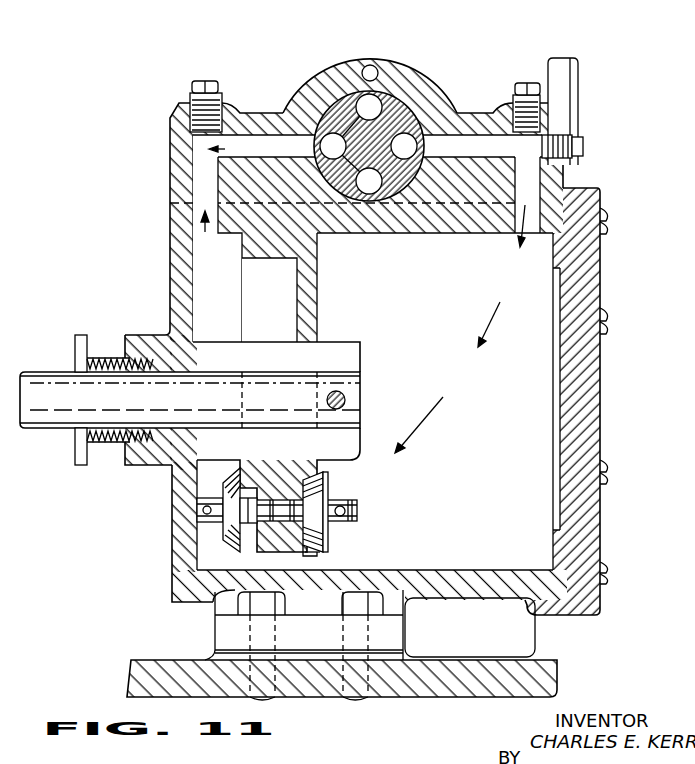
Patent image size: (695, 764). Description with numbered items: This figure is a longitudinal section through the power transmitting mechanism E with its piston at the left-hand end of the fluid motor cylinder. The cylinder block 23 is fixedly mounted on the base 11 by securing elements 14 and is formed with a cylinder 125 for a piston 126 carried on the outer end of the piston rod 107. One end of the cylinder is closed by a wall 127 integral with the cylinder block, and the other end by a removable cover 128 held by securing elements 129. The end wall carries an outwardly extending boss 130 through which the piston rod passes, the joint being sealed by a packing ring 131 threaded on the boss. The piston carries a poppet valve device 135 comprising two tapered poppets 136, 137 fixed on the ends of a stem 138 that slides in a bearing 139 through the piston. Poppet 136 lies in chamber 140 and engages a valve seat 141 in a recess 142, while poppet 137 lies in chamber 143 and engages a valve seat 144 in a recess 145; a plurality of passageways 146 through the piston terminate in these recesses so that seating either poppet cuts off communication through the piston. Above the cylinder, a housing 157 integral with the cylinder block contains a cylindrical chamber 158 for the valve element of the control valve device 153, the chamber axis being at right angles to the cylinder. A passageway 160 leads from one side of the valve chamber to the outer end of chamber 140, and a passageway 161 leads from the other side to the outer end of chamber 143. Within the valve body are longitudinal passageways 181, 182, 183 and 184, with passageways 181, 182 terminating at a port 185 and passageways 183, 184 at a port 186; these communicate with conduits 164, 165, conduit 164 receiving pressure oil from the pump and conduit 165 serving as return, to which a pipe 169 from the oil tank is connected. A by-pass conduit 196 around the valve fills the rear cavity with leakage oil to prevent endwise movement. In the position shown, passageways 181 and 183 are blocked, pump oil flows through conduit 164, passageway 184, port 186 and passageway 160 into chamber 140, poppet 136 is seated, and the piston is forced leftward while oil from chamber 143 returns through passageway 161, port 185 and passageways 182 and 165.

The passageway 184 is at (340, 112).
The by-pass conduit 196 is at (368, 64).
The conduit 164 is at (366, 100).
The cylindrical chamber 158 is at (408, 100).
The control valve device 153 is at (420, 87).
The port 186 is at (402, 116).
The pipe 169 is at (565, 76).
The power transmitting mechanism E is at (585, 138).
The housing 157 is at (320, 86).
The passageway 161 is at (257, 159).
The passageway 181 is at (315, 146).
The passageway 160 is at (515, 149).
The port 185 is at (341, 173).
The passageway 183 is at (413, 157).
The conduit 165 is at (362, 200).
The passageway 182 is at (382, 195).
The wall 127 is at (175, 268).
The chamber 143 is at (232, 306).
The piston 126 is at (306, 303).
The packing ring 131 is at (97, 362).
The piston rod 107 is at (38, 393).
The chamber 140 is at (503, 437).
The securing elements 129 is at (604, 320).
The removable cover 128 is at (592, 376).
The boss 130 is at (140, 468).
The valve seat 144 is at (268, 498).
The recess 145 is at (262, 492).
The bearing 139 is at (245, 495).
The poppet valve device 135 is at (333, 480).
The stem 138 is at (358, 512).
The poppet 137 is at (228, 541).
The passageways 146 is at (293, 524).
The poppet 136 is at (328, 541).
The valve seat 141 is at (330, 554).
The recess 142 is at (322, 563).
The cylinder 125 is at (498, 540).
The securing elements 14 is at (318, 596).
The cylinder block 23 is at (494, 585).
The base 11 is at (514, 661).